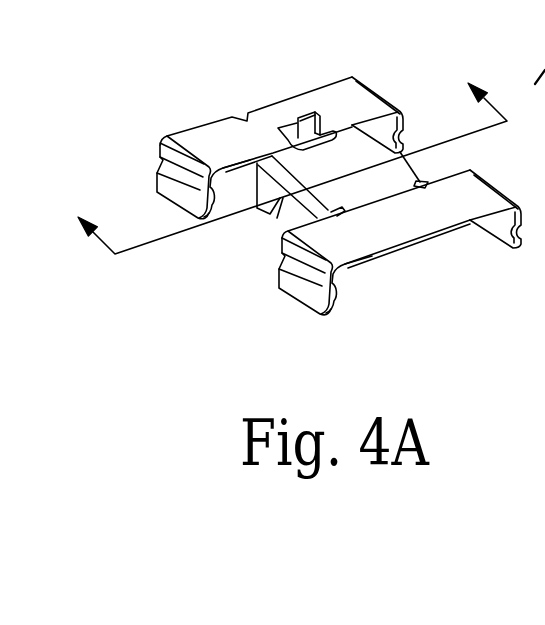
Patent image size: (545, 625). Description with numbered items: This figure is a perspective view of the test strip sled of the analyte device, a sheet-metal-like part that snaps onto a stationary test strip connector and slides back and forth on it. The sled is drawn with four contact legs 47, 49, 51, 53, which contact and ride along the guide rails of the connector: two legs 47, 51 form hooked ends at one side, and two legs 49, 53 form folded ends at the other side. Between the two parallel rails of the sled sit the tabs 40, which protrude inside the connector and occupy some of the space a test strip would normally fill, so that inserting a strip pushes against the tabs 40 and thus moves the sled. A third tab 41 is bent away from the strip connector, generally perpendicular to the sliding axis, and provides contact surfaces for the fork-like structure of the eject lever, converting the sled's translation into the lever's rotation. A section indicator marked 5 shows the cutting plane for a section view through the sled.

The section line 5- 5 is at (285, 159).
The tabs 40 is at (260, 205).
The third tab 41 is at (292, 126).
The contact leg 47 is at (158, 197).
The contact leg 49 is at (385, 93).
The contact leg 51 is at (300, 298).
The contact leg 53 is at (500, 236).